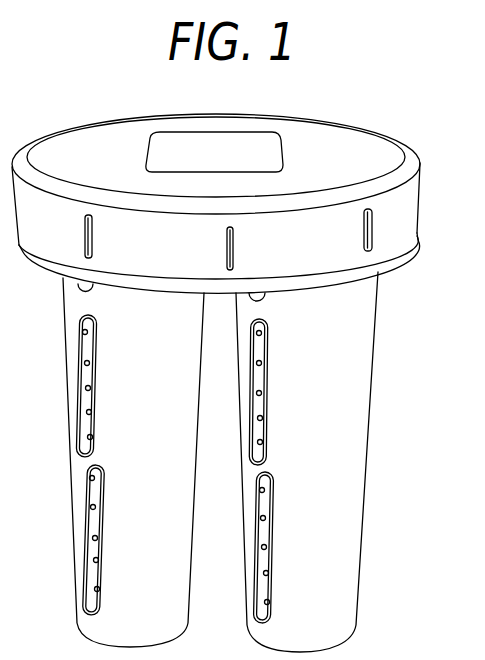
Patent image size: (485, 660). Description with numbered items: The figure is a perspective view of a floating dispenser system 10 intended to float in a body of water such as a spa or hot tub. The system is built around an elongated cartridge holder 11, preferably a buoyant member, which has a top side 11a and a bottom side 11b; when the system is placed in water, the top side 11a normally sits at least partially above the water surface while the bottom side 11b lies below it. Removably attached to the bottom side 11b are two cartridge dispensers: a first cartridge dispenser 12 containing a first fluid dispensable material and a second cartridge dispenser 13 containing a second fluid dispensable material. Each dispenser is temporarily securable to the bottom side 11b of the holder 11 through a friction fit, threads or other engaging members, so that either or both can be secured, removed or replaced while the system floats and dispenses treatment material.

The floating dispenser system 10 is at (345, 97).
The elongated cartridge holder 11 is at (393, 212).
The top side 11a is at (350, 140).
The bottom side 11b is at (203, 145).
The first cartridge dispenser 12 is at (337, 468).
The second cartridge dispenser 13 is at (68, 450).